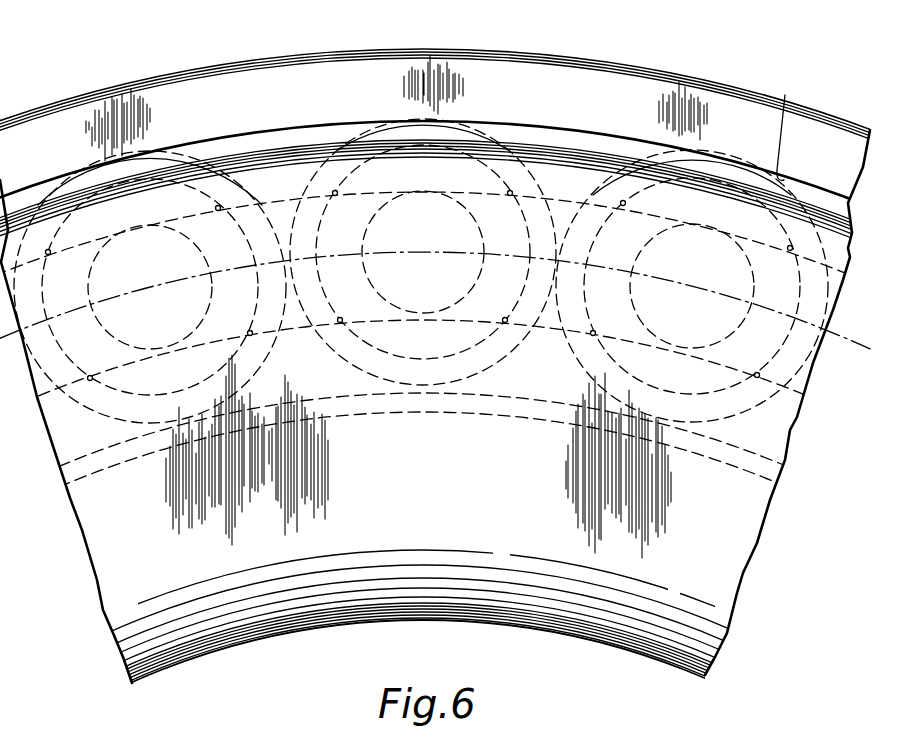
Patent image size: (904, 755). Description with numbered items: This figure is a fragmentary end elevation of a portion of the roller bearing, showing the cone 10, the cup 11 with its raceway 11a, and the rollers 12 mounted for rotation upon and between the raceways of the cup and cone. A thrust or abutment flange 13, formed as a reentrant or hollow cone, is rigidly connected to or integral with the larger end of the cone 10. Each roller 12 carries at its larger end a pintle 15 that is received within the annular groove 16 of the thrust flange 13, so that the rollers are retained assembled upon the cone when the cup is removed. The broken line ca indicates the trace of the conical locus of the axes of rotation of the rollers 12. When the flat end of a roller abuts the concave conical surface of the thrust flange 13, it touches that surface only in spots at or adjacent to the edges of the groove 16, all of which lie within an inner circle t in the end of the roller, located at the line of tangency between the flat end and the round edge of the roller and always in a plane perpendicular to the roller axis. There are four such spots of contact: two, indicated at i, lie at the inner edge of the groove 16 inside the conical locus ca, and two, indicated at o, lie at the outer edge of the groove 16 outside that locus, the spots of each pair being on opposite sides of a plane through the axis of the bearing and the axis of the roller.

The cone 10 is at (740, 584).
The cup 11 is at (585, 84).
The raceway of the cup 11a is at (785, 95).
The rollers 12 is at (325, 352).
The thrust flange 13 is at (786, 428).
The pintle 15 is at (87, 288).
The annular groove 16 is at (288, 205).
The conical locus of roller axes ca is at (446, 307).
The outer spots of contact o is at (46, 240).
The inner spots of contact i is at (90, 380).
The inner circle of roller end t is at (240, 240).